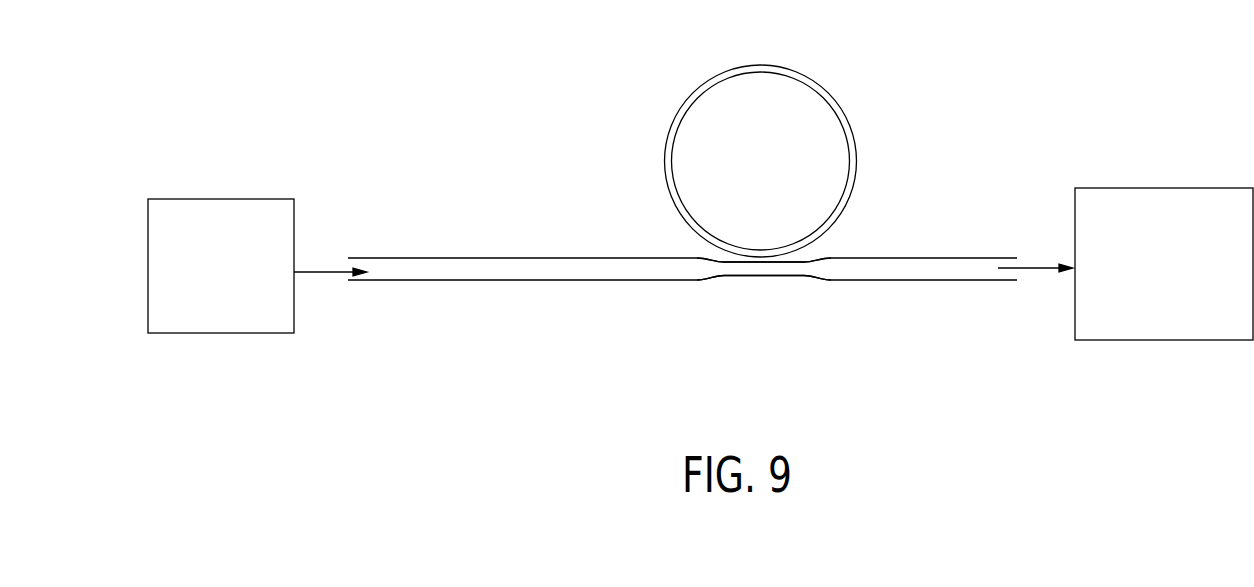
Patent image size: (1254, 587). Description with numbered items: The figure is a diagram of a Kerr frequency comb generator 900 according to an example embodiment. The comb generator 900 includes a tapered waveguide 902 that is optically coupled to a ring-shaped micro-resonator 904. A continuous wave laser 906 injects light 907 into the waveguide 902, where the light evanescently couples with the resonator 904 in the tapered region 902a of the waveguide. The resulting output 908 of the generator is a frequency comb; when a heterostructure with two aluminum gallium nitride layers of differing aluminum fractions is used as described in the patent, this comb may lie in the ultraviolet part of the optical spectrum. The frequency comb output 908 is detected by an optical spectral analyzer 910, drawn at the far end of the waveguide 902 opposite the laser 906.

The Kerr frequency comb generator 900 is at (1010, 107).
The waveguide 902 is at (455, 268).
The tapered region 902a is at (765, 276).
The resonator 904 is at (676, 113).
The continuous wave laser 906 is at (220, 198).
The light 907 is at (330, 268).
The output 908 is at (1035, 272).
The optical spectral analyzer 910 is at (1167, 342).